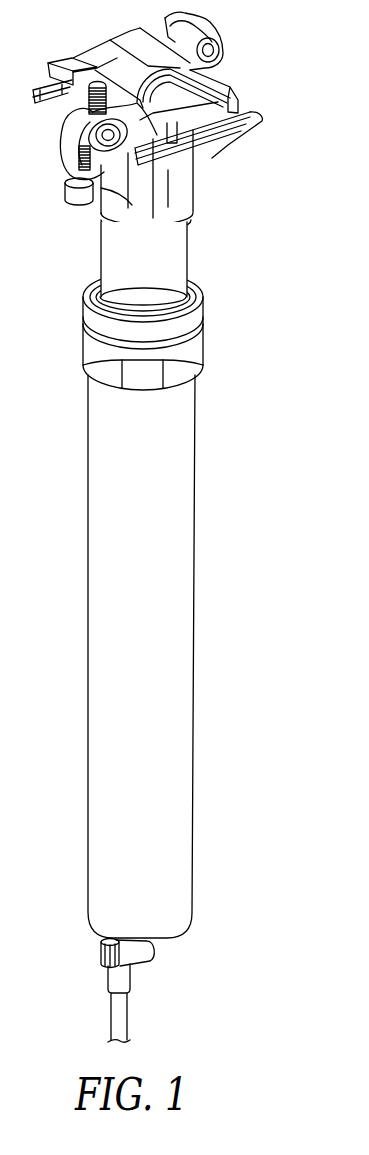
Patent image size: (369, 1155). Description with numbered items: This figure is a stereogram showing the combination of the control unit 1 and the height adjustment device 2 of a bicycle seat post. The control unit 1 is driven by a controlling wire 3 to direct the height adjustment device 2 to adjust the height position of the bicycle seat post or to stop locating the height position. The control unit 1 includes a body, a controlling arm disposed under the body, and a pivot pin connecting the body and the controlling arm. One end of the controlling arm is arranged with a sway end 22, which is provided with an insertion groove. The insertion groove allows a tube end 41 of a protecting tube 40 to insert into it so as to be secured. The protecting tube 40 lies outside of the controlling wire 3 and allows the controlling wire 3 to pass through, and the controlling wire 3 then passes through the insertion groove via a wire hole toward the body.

The control unit 1 is at (166, 527).
The height adjustment device 2 is at (217, 577).
The controlling wire 3 is at (115, 942).
The sway end 22 is at (107, 953).
The protecting tube 40 is at (118, 1018).
The tube end 41 is at (118, 974).